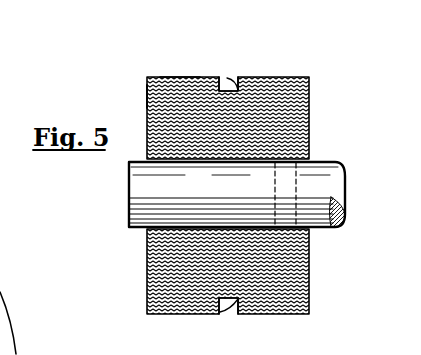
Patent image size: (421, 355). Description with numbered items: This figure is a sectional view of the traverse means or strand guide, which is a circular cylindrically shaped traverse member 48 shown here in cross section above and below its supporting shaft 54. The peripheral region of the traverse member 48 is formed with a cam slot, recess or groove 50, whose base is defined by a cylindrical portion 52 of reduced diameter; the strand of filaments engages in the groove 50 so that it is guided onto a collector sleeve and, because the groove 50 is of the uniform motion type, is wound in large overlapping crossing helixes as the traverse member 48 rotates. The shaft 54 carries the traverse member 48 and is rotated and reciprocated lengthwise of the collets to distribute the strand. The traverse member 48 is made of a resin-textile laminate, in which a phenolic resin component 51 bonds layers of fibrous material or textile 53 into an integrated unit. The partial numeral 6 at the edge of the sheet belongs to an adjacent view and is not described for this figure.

The traverse member 48 is at (275, 77).
The cam groove 50 is at (230, 78).
The cylindrical portion of reduced diameter 52 is at (224, 80).
The fibrous material or textile 53 is at (180, 80).
The resin component 51 is at (147, 101).
The shaft 54 is at (129, 205).
The adjacent element (partial) 6 is at (8, 288).